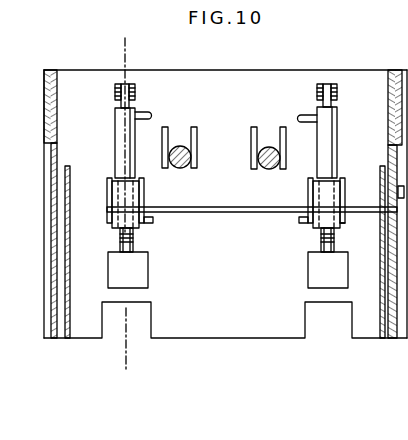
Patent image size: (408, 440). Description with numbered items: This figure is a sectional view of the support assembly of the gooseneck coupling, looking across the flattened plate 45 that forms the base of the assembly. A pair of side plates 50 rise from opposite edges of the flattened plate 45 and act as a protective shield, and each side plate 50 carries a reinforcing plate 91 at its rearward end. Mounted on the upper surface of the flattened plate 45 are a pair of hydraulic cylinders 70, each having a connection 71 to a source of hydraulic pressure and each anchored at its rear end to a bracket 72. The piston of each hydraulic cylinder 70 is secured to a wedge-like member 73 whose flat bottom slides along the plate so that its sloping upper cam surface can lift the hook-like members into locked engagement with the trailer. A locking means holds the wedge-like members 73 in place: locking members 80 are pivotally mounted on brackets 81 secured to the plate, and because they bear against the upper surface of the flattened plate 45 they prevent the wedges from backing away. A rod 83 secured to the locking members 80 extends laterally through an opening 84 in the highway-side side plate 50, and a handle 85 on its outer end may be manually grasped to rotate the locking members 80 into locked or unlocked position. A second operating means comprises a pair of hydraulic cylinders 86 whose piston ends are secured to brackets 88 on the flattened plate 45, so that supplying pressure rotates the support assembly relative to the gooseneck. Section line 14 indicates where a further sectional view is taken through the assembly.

The section line 14- 14 is at (146, 49).
The flattened plate 45 is at (242, 320).
The side plates 50 is at (60, 110).
The hydraulic cylinders 70 is at (116, 134).
The connection 71 is at (146, 113).
The bracket 72 is at (133, 84).
The wedge-like member 73 is at (142, 271).
The locking members 80 is at (108, 181).
The brackets 81 is at (112, 228).
The rod 83 is at (235, 212).
The opening 84 is at (344, 223).
The handle 85 is at (400, 197).
The hydraulic cylinders 86 is at (186, 167).
The brackets 88 is at (167, 128).
The reinforcing plates 91 is at (52, 68).